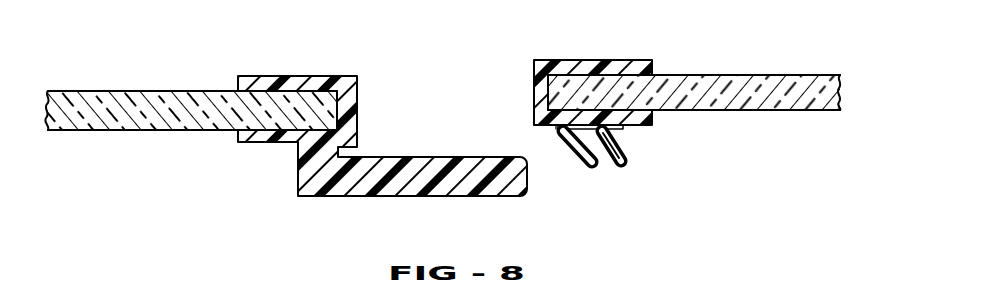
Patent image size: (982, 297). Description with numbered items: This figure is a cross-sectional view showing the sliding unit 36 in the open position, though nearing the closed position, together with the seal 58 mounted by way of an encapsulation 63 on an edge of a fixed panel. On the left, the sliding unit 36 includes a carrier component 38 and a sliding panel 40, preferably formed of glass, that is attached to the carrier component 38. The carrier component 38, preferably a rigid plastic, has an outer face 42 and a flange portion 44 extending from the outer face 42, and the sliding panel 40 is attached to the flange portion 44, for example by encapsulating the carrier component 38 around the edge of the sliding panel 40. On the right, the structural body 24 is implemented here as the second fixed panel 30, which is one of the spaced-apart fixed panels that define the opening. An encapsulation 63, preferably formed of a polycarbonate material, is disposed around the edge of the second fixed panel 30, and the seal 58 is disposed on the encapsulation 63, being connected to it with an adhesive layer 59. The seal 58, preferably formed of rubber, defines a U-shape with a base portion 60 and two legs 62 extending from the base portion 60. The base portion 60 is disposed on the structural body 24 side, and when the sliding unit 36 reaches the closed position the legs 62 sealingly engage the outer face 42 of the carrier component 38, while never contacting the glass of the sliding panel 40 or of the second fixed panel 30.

The structural body 24 is at (843, 88).
The second fixed panel 30 is at (720, 75).
The sliding unit 36 is at (132, 141).
The carrier component 38 is at (392, 112).
The sliding panel 40 is at (83, 131).
The outer face 42 is at (390, 157).
The flange portion 44 is at (340, 147).
The seal 58 is at (621, 175).
The adhesive layer 59 is at (550, 130).
The base portion 60 is at (622, 131).
The legs 62 is at (622, 138).
The encapsulation 63 is at (583, 60).